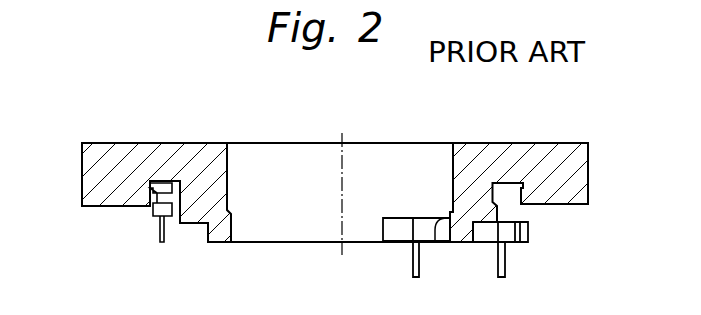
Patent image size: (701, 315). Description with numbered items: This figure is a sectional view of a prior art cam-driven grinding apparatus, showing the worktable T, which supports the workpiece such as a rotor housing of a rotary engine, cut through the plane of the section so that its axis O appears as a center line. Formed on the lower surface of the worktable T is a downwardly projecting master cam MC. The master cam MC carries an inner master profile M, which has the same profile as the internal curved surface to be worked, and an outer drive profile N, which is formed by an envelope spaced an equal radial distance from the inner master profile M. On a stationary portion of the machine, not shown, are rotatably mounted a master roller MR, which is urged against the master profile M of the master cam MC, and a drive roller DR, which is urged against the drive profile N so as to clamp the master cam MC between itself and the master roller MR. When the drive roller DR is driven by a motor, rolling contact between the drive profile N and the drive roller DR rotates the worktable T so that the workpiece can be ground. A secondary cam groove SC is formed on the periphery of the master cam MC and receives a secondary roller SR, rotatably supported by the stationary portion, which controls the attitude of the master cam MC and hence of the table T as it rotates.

The worktable T is at (505, 147).
The optical axis O is at (343, 194).
The secondary roller SR is at (158, 190).
The secondary cam groove SC is at (513, 190).
The drive roller DR is at (528, 232).
The master roller MR is at (392, 243).
The inner master profile M is at (442, 243).
The master cam MC is at (460, 243).
The outer drive profile N is at (483, 243).